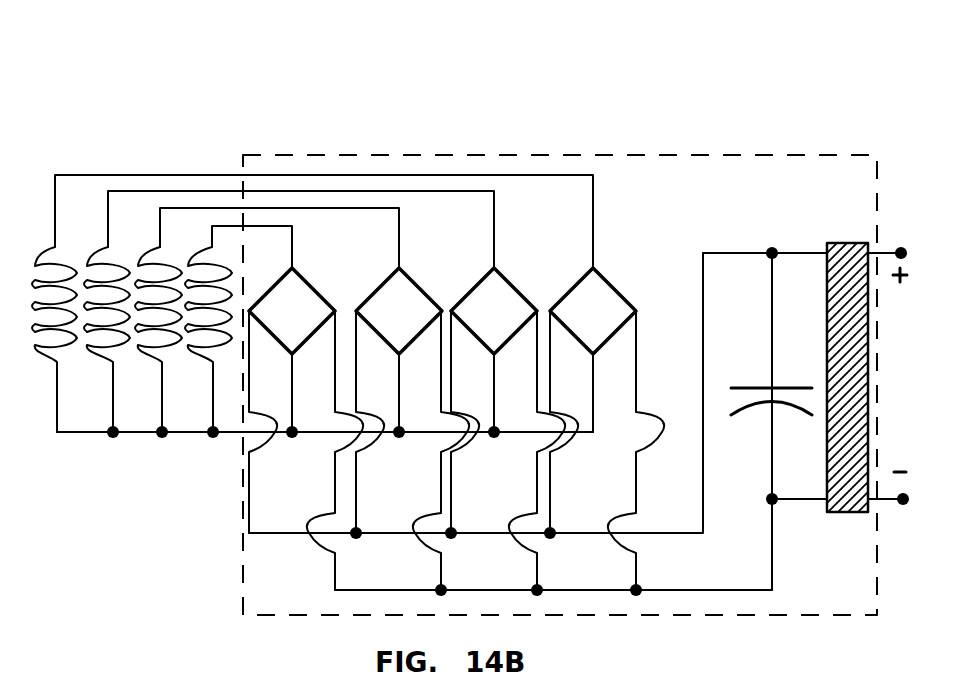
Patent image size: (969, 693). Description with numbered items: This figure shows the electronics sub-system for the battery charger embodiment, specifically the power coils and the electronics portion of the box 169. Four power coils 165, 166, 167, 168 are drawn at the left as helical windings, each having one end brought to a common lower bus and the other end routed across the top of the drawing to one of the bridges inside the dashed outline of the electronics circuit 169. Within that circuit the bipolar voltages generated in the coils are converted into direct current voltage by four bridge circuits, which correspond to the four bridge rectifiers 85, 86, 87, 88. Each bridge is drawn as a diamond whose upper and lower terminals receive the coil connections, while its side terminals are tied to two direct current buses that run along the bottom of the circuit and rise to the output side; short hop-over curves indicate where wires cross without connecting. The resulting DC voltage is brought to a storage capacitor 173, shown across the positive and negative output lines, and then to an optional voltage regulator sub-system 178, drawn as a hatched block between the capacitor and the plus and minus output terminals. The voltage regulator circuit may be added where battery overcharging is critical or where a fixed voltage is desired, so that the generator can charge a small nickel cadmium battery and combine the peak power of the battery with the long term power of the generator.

The bridge rectifier 85 is at (323, 297).
The bridge rectifier 86 is at (435, 300).
The bridge rectifier 87 is at (495, 288).
The bridge rectifier 88 is at (595, 293).
The first winding 165 is at (38, 247).
The second winding 166 is at (100, 362).
The third winding 167 is at (140, 362).
The fourth winding 168 is at (198, 362).
The electronics circuit 169 is at (415, 154).
The storage capacitor 173 is at (758, 383).
The voltage regulator sub-system 178 is at (856, 243).